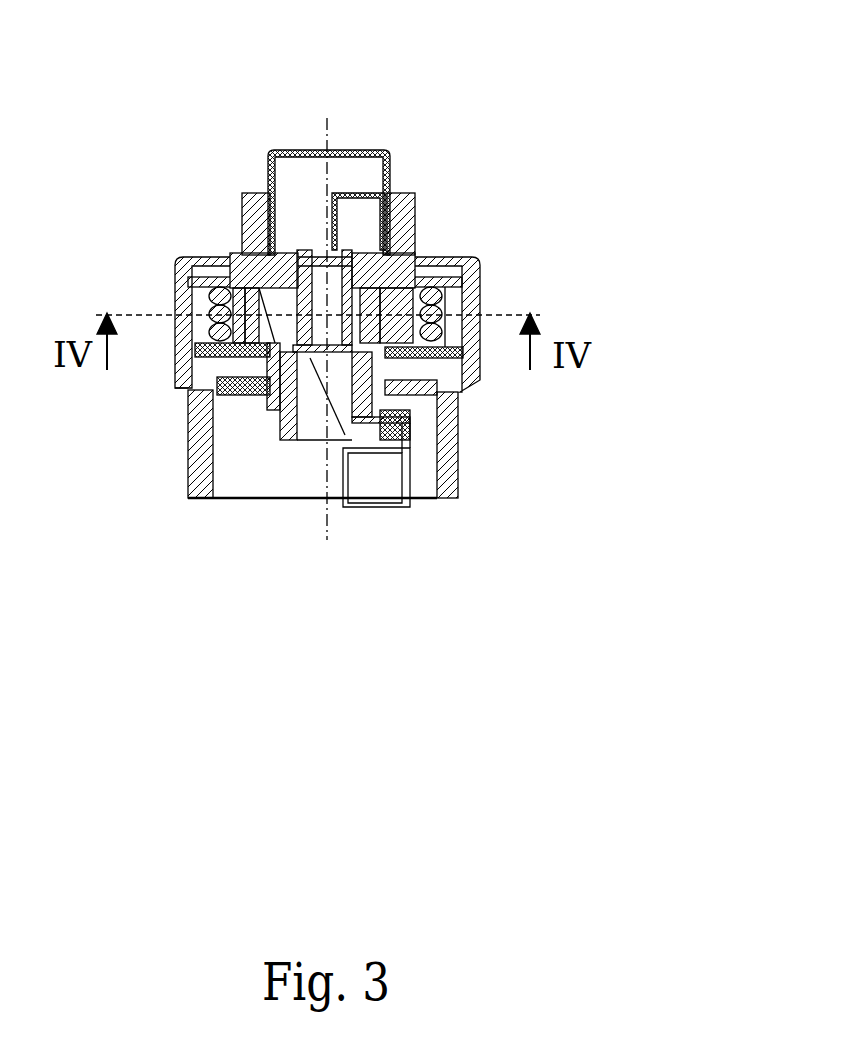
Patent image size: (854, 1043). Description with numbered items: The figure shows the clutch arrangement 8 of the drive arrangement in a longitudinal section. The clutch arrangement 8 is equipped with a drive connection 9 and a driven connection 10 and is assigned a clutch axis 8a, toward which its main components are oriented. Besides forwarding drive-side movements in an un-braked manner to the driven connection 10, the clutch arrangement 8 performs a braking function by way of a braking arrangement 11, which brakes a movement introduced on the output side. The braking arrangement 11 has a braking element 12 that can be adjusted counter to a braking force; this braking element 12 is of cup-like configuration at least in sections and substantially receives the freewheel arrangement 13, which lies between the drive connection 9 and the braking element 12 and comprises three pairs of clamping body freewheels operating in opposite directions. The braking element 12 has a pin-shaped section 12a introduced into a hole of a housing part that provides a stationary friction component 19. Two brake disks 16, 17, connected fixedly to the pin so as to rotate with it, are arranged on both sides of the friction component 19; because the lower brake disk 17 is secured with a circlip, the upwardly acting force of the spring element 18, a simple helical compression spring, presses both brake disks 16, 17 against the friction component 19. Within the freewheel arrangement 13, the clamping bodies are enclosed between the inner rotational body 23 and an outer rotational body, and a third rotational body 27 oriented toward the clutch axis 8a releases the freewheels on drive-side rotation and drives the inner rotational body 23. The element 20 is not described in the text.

The clutch arrangement 8 is at (606, 127).
The clutch axis 8a is at (330, 135).
The drive connection 9 is at (215, 223).
The driven connection 10 is at (250, 521).
The braking arrangement 11 is at (505, 293).
The braking element 12 is at (463, 257).
The pin-shaped section 12a is at (383, 440).
The freewheel arrangement 13 is at (415, 224).
The brake disk 16 is at (445, 345).
The brake disk 17 is at (460, 413).
The spring element 18 is at (200, 292).
The friction component 19 is at (240, 368).
The guide element 20 is at (188, 493).
The inner rotational body 23 is at (340, 363).
The third rotational body 27 is at (246, 192).